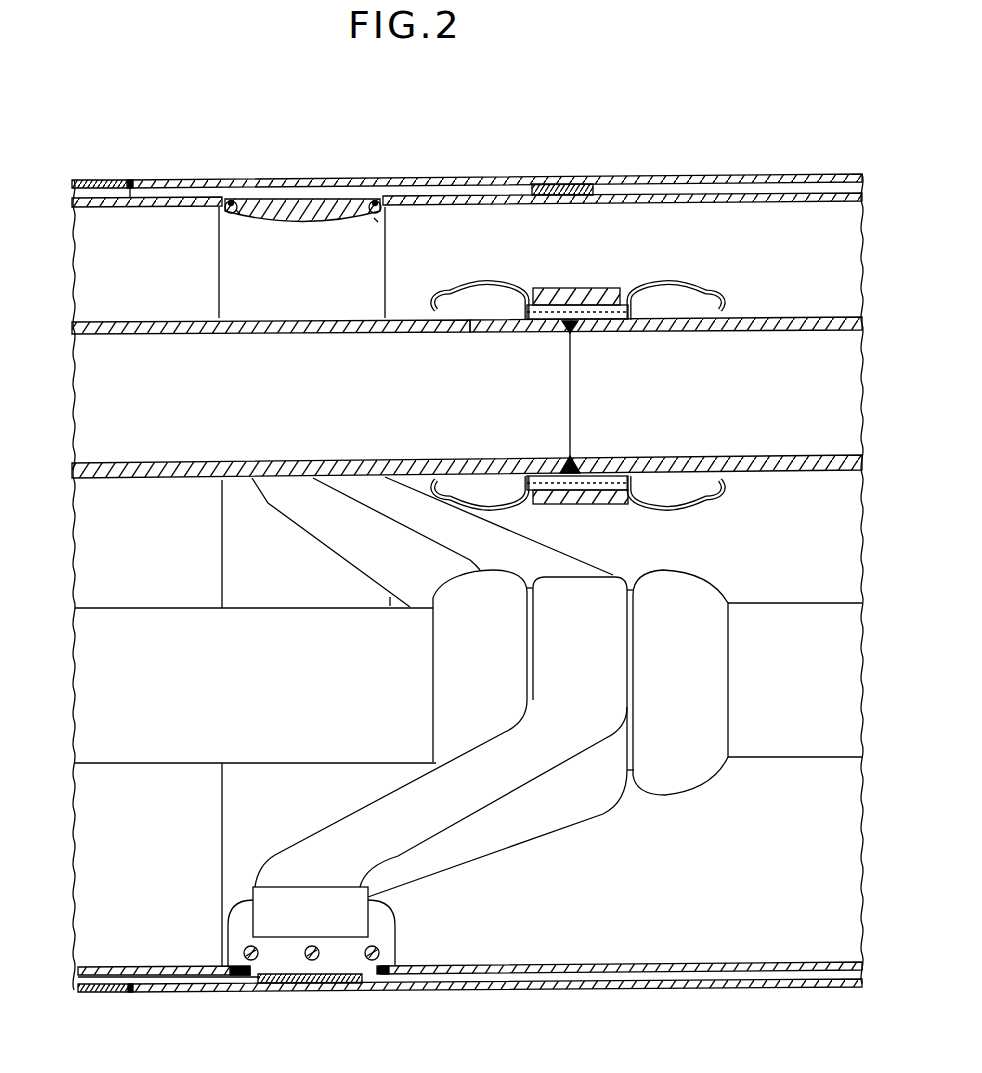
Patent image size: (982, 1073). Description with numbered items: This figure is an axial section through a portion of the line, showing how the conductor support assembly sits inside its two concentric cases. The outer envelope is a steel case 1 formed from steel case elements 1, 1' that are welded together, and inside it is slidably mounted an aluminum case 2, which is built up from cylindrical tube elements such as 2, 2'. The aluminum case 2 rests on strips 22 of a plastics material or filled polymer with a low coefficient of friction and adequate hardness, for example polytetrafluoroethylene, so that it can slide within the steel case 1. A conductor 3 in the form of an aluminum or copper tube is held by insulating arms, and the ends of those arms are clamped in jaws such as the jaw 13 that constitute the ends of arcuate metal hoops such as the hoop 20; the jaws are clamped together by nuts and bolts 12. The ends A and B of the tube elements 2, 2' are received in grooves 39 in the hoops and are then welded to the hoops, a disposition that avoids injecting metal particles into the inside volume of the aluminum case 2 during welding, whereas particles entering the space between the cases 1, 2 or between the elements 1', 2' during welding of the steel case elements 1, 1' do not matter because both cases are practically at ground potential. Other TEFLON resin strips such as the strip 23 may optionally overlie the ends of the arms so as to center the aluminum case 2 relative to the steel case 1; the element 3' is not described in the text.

The steel case 1 is at (101, 152).
The steel case element 1' is at (494, 152).
The aluminum case 2 is at (147, 235).
The cylindrical tube element 2' is at (622, 233).
The conductor 3 is at (271, 310).
The second partition plate 3' is at (666, 305).
The strips 22 is at (562, 185).
The hoop 20 is at (293, 217).
The grooves 39 is at (222, 226).
The end of tube element A is at (376, 220).
The end of tube element B is at (237, 212).
The jaw 13 is at (278, 955).
The TEFLON resin strip 23 is at (317, 978).
The bolt 12 is at (355, 987).